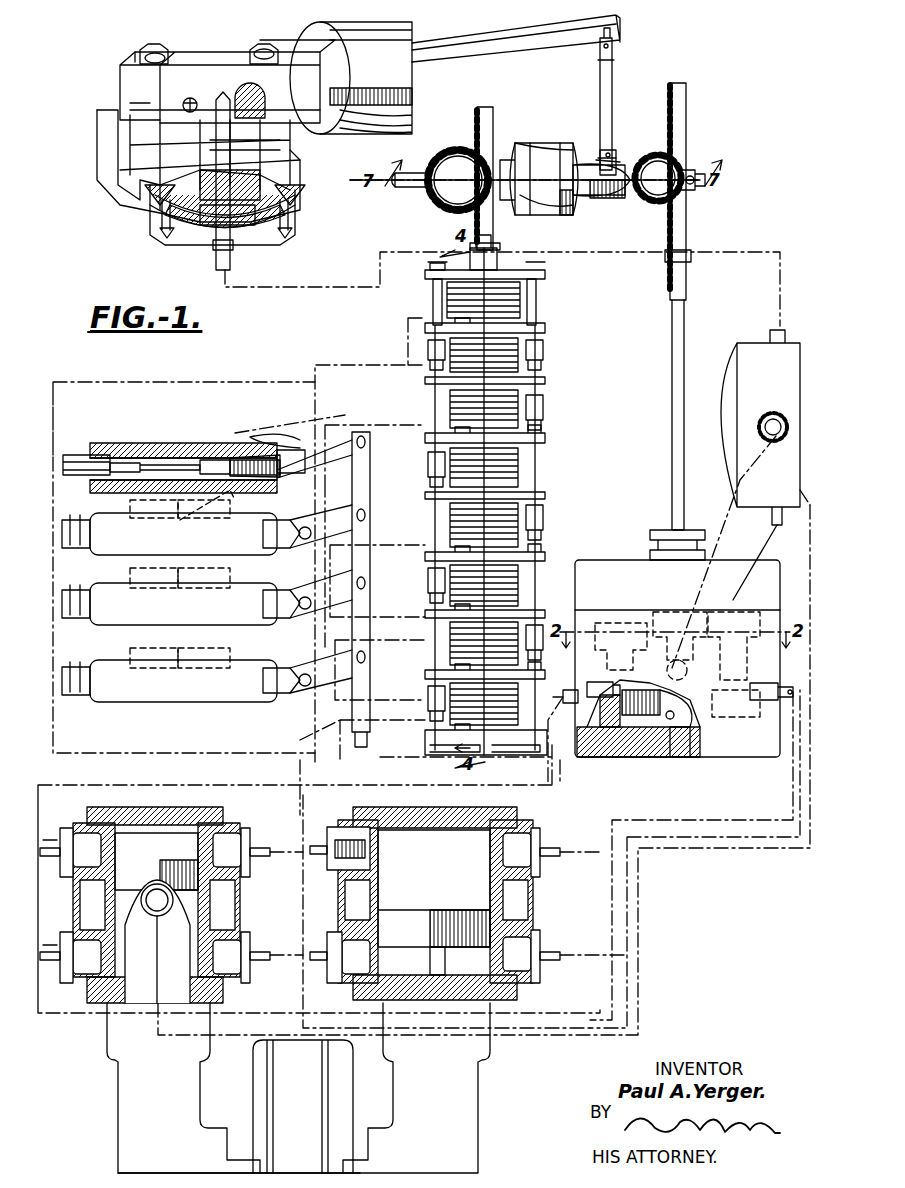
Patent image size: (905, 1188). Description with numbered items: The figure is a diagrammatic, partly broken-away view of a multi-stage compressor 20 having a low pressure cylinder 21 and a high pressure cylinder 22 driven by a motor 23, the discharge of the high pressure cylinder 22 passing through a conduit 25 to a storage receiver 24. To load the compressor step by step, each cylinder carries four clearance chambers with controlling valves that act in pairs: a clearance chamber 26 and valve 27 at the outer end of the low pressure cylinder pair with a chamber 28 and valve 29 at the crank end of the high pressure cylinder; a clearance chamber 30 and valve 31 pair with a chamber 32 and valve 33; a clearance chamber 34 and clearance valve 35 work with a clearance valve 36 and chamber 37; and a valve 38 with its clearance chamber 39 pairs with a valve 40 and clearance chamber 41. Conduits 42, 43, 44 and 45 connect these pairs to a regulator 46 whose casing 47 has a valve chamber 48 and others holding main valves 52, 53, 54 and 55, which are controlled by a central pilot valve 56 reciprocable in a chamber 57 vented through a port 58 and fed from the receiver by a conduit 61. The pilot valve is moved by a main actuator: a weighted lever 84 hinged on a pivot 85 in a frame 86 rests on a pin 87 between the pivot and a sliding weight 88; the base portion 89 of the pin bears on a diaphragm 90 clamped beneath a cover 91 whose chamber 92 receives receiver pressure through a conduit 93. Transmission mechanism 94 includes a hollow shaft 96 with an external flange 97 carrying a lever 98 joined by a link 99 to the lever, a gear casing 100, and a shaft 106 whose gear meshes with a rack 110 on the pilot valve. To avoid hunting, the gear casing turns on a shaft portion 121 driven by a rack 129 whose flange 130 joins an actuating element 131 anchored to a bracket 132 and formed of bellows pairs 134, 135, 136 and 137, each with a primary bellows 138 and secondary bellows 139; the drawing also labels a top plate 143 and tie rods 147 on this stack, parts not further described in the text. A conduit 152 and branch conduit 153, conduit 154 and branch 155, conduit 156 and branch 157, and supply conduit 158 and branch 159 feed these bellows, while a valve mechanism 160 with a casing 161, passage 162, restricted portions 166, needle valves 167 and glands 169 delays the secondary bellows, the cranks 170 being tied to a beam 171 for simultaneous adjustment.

The multi-stage compressor 20 is at (105, 1060).
The low pressure cylinder 21 is at (533, 905).
The high pressure cylinder 22 is at (75, 895).
The motor 23 is at (340, 1085).
The storage receiver 24 is at (765, 348).
The conduit 25 is at (150, 925).
The clearance chamber 26 is at (385, 880).
The valve 27 is at (340, 830).
The chamber 28 is at (230, 920).
The valve 29 is at (235, 960).
The clearance chamber 30 is at (517, 990).
The valve 31 is at (525, 955).
The chamber 32 is at (80, 890).
The valve 33 is at (73, 840).
The clearance chamber 34 is at (525, 885).
The clearance valve 35 is at (525, 845).
The clearance valve 36 is at (73, 955).
The chamber 37 is at (87, 995).
The valve 38 is at (235, 845).
The clearance chamber 39 is at (230, 888).
The valve 40 is at (345, 950).
The clearance chamber 41 is at (350, 890).
The conduit 42 is at (580, 775).
The conduit 43 is at (560, 705).
The conduit 44 is at (668, 820).
The conduit 45 is at (710, 820).
The regulator 46 is at (605, 560).
The casing 47 is at (730, 560).
The valve chamber 48 is at (625, 740).
The main valve 52 is at (598, 680).
The main valve 53 is at (650, 605).
The main valve 54 is at (750, 605).
The main valve 55 is at (688, 605).
The pilot valve 56 is at (690, 715).
The valve chamber 57 is at (700, 730).
The port 58 is at (680, 745).
The conduit 61 is at (780, 525).
The weighted lever 84 is at (447, 36).
The pivot 85 is at (188, 92).
The frame 86 is at (120, 70).
The pin 87 is at (240, 92).
The weight 88 is at (430, 22).
The base portion 89 is at (200, 160).
The diaphragm 90 is at (190, 250).
The cover 91 is at (290, 200).
The chamber 92 is at (240, 210).
The conduit 93 is at (232, 265).
The transmission mechanism 94 is at (614, 145).
The hollow shaft 96 is at (600, 198).
The external flange 97 is at (560, 210).
The lever 98 is at (580, 160).
The link 99 is at (612, 70).
The gear casing 100 is at (530, 140).
The shaft 106 is at (698, 170).
The rack 110 is at (686, 100).
The shaft portion 121 is at (395, 185).
The rack 129 is at (490, 110).
The flange 130 is at (495, 262).
The actuating element 131 is at (520, 300).
The bracket 132 is at (425, 752).
The pair of bellows 134 is at (545, 328).
The pair of bellows 135 is at (545, 438).
The pair of bellows 136 is at (545, 556).
The pair of bellows 137 is at (545, 675).
The primary bellows 138 is at (518, 405).
The secondary bellows 139 is at (518, 465).
The top plate 143 is at (540, 275).
The tie rod 147 is at (428, 268).
The conduit 152 is at (330, 362).
The branch conduit 153 is at (75, 382).
The conduit 154 is at (398, 415).
The branch conduit 155 is at (62, 532).
The conduit 156 is at (400, 530).
The branch conduit 157 is at (62, 603).
The supply conduit 158 is at (415, 680).
The branch conduit 159 is at (62, 680).
The valve mechanism 160 is at (228, 410).
The casing 161 is at (255, 440).
The passage 162 is at (100, 452).
The restricted portion 166 is at (135, 658).
The needle valve 167 is at (178, 658).
The gland 169 is at (245, 712).
The crank 170 is at (380, 610).
The beam 171 is at (370, 450).